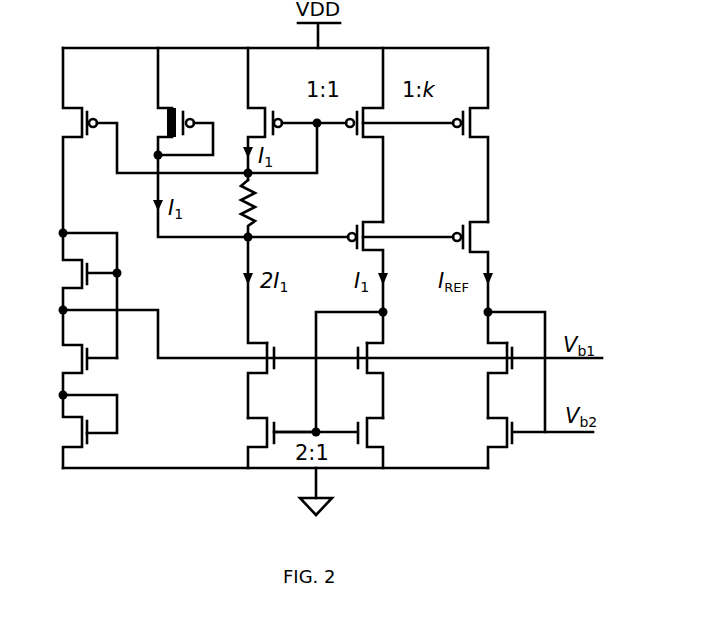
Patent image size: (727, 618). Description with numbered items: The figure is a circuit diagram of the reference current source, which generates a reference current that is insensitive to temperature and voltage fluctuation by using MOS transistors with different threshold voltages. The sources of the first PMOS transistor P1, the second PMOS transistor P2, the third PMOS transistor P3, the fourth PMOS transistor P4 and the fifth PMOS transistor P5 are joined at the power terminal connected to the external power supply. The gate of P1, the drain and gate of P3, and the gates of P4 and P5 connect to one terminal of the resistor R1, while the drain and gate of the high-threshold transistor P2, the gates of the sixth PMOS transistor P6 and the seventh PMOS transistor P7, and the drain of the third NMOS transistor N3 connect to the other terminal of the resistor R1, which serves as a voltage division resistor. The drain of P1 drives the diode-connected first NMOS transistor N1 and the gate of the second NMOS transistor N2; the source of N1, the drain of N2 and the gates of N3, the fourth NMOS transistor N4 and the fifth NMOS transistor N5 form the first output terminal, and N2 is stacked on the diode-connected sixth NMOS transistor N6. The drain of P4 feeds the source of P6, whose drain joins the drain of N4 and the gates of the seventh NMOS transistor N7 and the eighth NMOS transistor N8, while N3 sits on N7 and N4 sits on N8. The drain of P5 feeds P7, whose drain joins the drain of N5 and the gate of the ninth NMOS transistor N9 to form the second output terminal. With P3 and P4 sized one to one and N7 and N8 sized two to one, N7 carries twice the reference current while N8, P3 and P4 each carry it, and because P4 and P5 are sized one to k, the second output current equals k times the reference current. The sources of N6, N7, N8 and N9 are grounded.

The 1st PMOS transistor P1 is at (63, 140).
The 2nd PMOS transistor P2 is at (203, 142).
The 3rd PMOS transistor P3 is at (266, 114).
The 4th PMOS transistor P4 is at (364, 135).
The 5th PMOS transistor P5 is at (470, 135).
The 6th PMOS transistor P6 is at (362, 267).
The 7th PMOS transistor P7 is at (473, 267).
The 1st NMOS transistor N1 is at (72, 271).
The 2nd NMOS transistor N2 is at (72, 352).
The 3rd NMOS transistor N3 is at (243, 374).
The 4th NMOS transistor N4 is at (353, 374).
The 5th NMOS transistor N5 is at (479, 374).
The 6th NMOS transistor N6 is at (58, 431).
The 7th NMOS transistor N7 is at (263, 443).
The 8th NMOS transistor N8 is at (366, 443).
The 9th NMOS transistor N9 is at (498, 443).
The resistor R1 is at (266, 261).